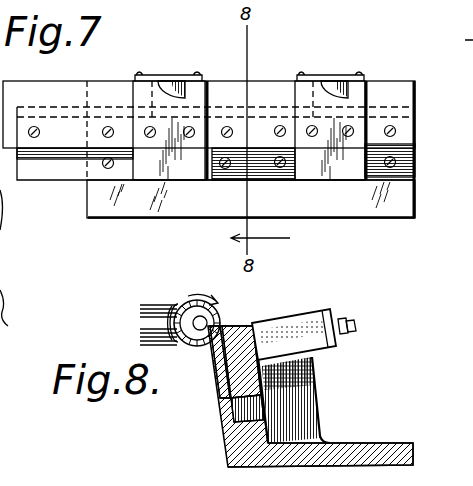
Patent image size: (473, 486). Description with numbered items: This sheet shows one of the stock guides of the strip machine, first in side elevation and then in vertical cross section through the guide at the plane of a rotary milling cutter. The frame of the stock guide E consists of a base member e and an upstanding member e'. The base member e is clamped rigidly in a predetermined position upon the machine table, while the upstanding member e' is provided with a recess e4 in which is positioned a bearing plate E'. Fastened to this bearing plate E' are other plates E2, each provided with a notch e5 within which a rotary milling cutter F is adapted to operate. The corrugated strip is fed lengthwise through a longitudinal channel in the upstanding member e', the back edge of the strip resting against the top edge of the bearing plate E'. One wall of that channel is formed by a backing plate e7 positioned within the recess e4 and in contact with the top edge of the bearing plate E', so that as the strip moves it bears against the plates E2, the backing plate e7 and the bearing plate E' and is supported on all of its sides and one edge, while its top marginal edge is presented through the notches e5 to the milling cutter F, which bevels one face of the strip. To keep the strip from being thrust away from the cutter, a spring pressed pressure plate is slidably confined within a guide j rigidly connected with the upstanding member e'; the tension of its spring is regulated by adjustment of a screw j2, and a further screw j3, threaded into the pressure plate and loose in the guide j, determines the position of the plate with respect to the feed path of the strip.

In FIG. 7, the stock guide E is at (209, 113).
In FIG. 8, the stock guide E is at (310, 396).
In FIG. 7, the bearing plate E' is at (233, 143).
In FIG. 8, the bearing plate E' is at (207, 439).
In FIG. 7, the plates E2 is at (139, 86).
In FIG. 8, the plates E2 is at (215, 352).
In FIG. 7, the base member e is at (267, 183).
In FIG. 8, the base member e is at (320, 464).
In FIG. 7, the notches e5 is at (171, 83).
In FIG. 8, the backing plate e7 is at (221, 332).
In FIG. 8, the recess e4 is at (233, 402).
In FIG. 8, the upstanding member e' is at (290, 364).
In FIG. 8, the rotary milling cutter F is at (200, 300).
In FIG. 8, the guide j is at (302, 317).
In FIG. 8, the adjusting screw j2 is at (357, 325).
In FIG. 8, the screw j3 is at (346, 322).